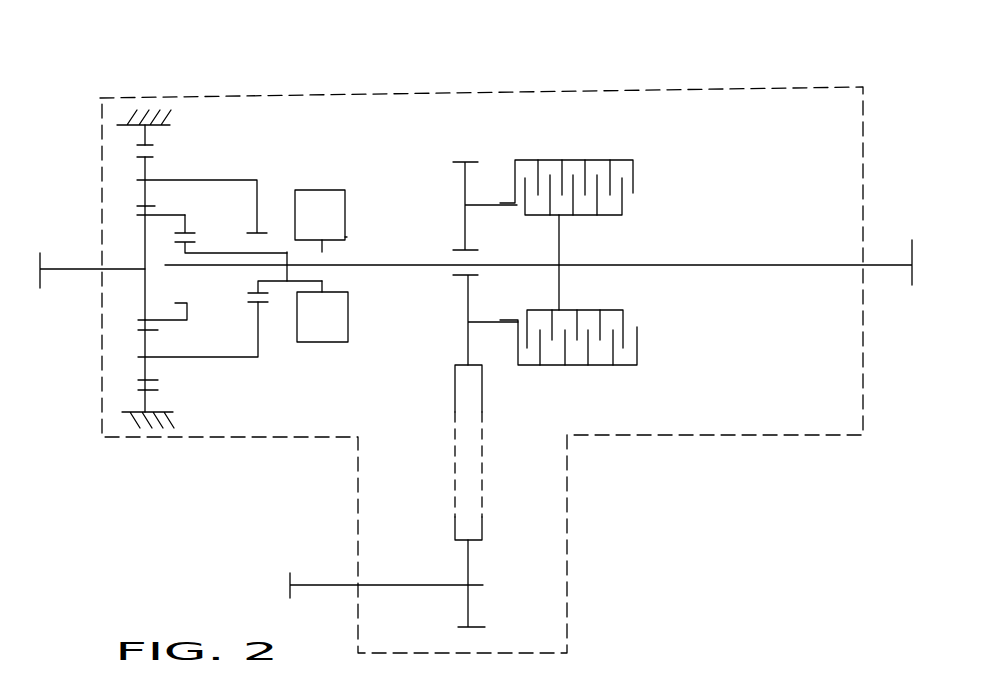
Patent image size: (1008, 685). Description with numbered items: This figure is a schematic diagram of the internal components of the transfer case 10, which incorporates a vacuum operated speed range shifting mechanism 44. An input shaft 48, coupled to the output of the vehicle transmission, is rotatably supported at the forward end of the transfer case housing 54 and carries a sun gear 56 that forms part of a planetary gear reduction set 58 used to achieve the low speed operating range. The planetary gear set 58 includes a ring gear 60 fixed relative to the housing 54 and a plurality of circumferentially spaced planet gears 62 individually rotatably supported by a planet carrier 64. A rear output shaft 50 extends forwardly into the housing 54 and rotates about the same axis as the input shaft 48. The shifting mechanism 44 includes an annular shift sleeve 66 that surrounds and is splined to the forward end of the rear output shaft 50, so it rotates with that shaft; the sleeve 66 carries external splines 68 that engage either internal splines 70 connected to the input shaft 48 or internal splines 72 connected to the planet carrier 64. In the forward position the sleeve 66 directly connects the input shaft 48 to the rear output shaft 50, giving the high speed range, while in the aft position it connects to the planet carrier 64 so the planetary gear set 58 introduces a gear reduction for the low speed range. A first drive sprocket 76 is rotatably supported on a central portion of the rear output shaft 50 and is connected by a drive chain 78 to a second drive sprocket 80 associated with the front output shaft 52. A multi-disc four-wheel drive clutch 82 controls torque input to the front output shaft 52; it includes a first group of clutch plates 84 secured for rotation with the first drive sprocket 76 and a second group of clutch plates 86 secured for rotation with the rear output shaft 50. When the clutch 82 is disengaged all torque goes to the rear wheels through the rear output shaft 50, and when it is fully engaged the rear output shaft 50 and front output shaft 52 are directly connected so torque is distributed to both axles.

The transfer case 10 is at (682, 72).
The vacuum operated speed range shifting mechanism 44 is at (355, 240).
The input shaft 48 is at (43, 272).
The rear output shaft 50 is at (870, 245).
The front output shaft 52 is at (327, 585).
The transfer case housing 54 is at (525, 90).
The sun gear 56 is at (143, 215).
The planetary gear reduction set 58 is at (118, 180).
The ring gear 60 is at (143, 143).
The planet gears 62 is at (143, 170).
The planet carrier 64 is at (202, 357).
The shift sleeve 66 is at (275, 252).
The external splines 68 is at (193, 247).
The internal splines 70 is at (192, 303).
The internal splines 72 is at (248, 300).
The first drive sprocket 76 is at (463, 185).
The drive chain 78 is at (453, 407).
The second drive sprocket 80 is at (473, 617).
The multi-disc four-wheel drive clutch 82 is at (623, 377).
The first group of clutch plates 84 is at (583, 170).
The second group of clutch plates 86 is at (557, 317).